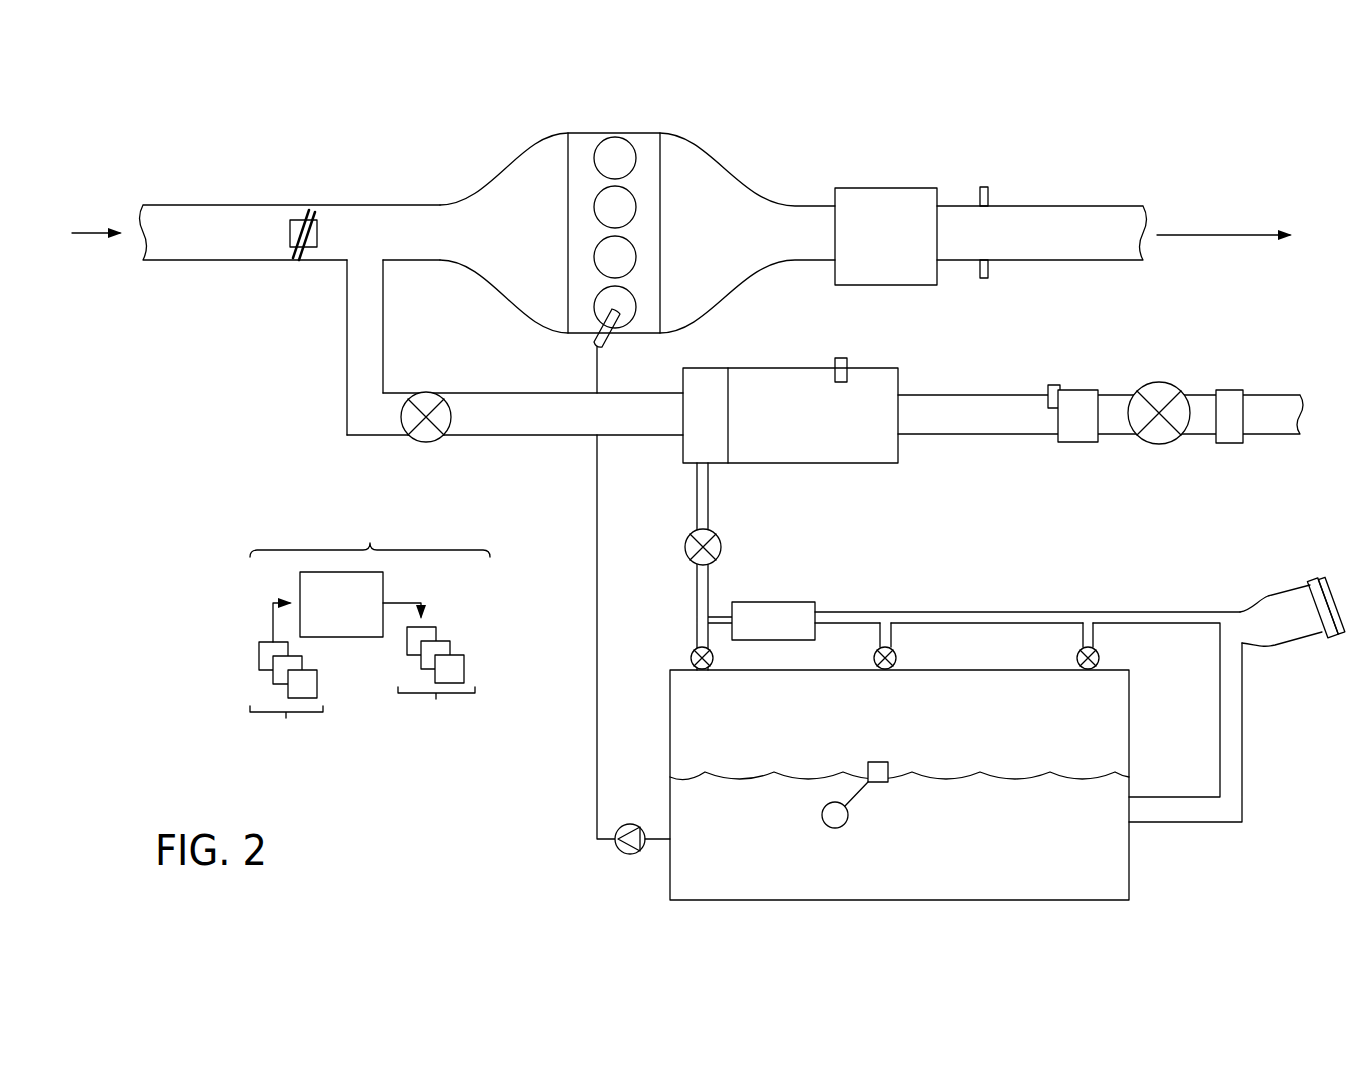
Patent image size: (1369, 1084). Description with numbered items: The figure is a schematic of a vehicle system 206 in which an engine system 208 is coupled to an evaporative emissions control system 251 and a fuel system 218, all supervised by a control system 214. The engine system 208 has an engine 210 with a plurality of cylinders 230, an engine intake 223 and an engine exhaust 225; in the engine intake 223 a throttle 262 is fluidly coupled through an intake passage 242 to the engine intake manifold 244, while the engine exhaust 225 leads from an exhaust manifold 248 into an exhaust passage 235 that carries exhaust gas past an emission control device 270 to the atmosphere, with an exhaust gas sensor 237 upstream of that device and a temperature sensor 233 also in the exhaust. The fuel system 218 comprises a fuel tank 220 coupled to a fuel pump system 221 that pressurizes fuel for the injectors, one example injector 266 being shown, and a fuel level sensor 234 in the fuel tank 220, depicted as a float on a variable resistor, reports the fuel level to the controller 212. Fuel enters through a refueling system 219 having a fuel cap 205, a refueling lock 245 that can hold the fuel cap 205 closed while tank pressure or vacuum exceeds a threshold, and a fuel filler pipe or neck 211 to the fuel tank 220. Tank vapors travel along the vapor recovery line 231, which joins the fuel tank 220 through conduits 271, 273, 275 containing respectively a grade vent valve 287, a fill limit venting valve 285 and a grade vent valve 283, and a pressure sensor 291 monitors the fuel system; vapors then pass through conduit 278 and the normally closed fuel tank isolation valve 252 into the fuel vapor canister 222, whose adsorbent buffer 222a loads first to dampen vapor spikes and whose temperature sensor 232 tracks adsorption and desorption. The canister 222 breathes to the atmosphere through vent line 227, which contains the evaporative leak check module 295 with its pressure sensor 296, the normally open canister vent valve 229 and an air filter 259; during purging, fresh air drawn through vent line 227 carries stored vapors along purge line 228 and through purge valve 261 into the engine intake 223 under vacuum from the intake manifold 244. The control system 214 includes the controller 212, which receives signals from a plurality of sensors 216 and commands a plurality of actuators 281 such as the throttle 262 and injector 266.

The vehicle system 206 is at (152, 130).
The engine intake 223 is at (492, 150).
The engine intake manifold 244 is at (531, 244).
The engine 210 is at (662, 215).
The cylinders 230 is at (636, 155).
The exhaust manifold 248 is at (743, 244).
The throttle 262 is at (317, 240).
The intake passage 242 is at (337, 262).
The engine exhaust 225 is at (830, 135).
The engine system 208 is at (955, 126).
The exhaust passage 235 is at (1100, 206).
The emission control device 270 is at (874, 188).
The exhaust gas sensor 237 is at (980, 196).
The temperature sensor 233 is at (983, 270).
The fuel injector 266 is at (600, 336).
The purge line 228 is at (540, 426).
The purge valve 261 is at (430, 392).
The fuel vapor canister 222 is at (898, 385).
The buffer 222a is at (705, 368).
The temperature sensor 232 is at (838, 358).
The vent line 227 is at (943, 424).
The pressure sensor 296 is at (1052, 385).
The evaporative leak check module 295 is at (1075, 390).
The canister vent valve 229 is at (1160, 382).
The air filter 259 is at (1236, 390).
The evaporative emissions control system 251 is at (1293, 346).
The conduit 278 is at (696, 492).
The fuel tank isolation valve 252 is at (690, 560).
The pressure sensor 291 is at (813, 607).
The grade vent valve 287 is at (690, 655).
The conduit 271 is at (710, 647).
The vapor recovery line 231 is at (1145, 612).
The conduit 273 is at (878, 646).
The fill limit venting valve 285 is at (898, 657).
The conduit 275 is at (1078, 643).
The grade vent valve 283 is at (1095, 658).
The fuel filler pipe 211 is at (1243, 718).
The fuel cap 205 is at (1322, 580).
The fuel filler system 219 is at (1289, 570).
The refueling lock 245 is at (1318, 632).
The fuel tank 220 is at (1129, 766).
The fuel level sensor 234 is at (882, 762).
The fuel pump system 221 is at (630, 826).
The fuel system 218 is at (1178, 858).
The control system 214 is at (370, 629).
The controller 212 is at (341, 604).
The sensors 216 is at (286, 679).
The actuators 281 is at (429, 671).